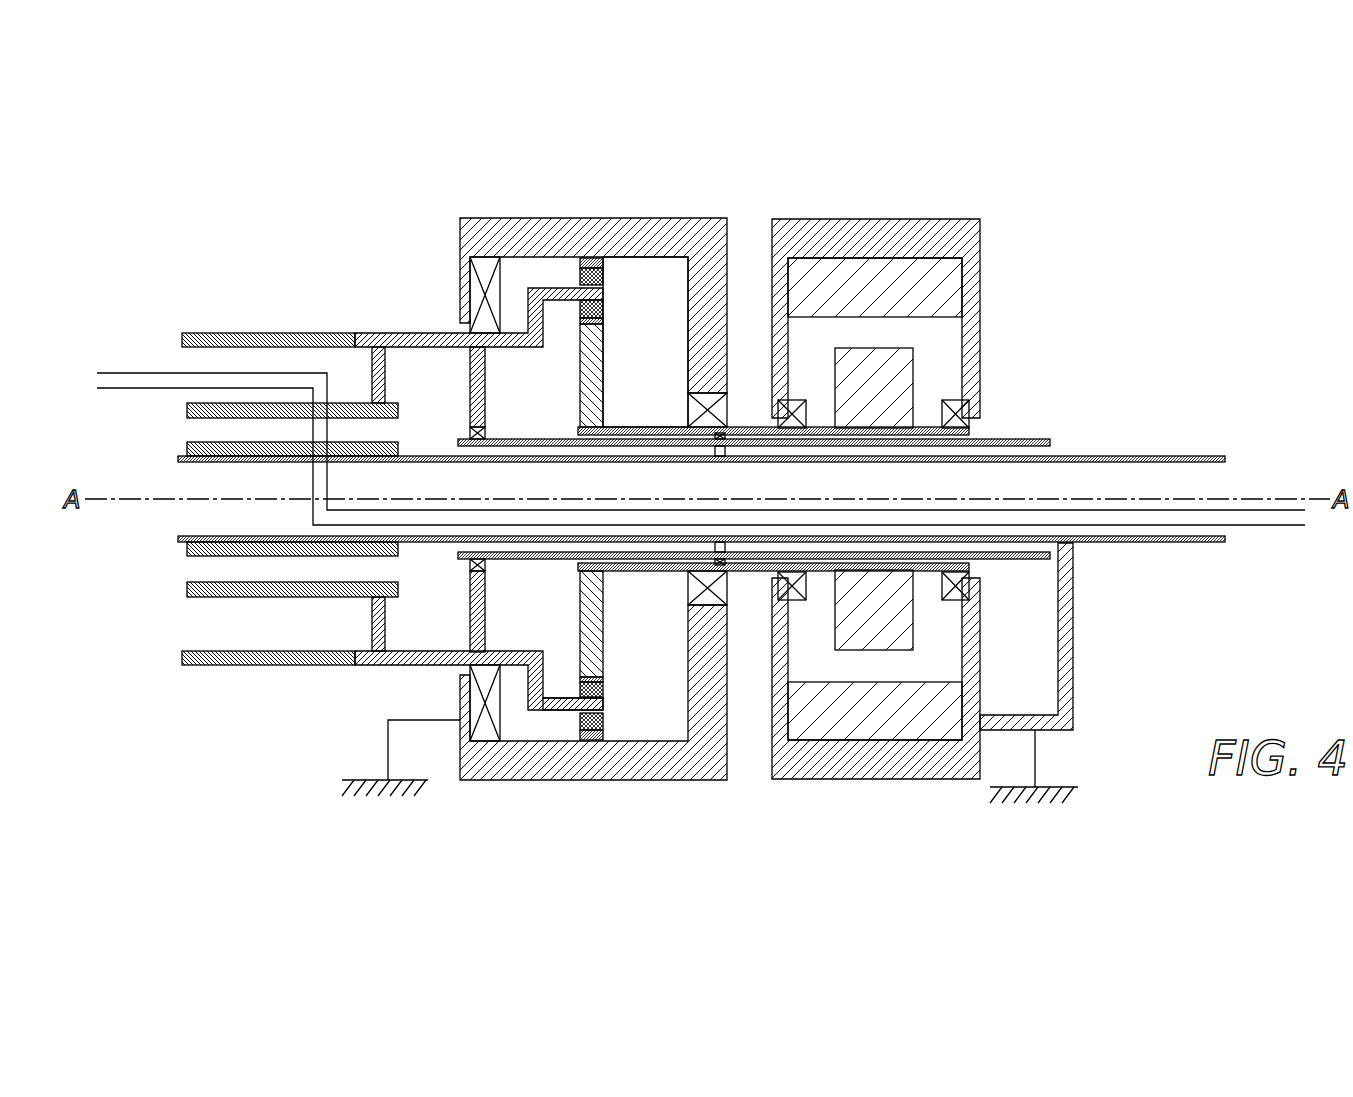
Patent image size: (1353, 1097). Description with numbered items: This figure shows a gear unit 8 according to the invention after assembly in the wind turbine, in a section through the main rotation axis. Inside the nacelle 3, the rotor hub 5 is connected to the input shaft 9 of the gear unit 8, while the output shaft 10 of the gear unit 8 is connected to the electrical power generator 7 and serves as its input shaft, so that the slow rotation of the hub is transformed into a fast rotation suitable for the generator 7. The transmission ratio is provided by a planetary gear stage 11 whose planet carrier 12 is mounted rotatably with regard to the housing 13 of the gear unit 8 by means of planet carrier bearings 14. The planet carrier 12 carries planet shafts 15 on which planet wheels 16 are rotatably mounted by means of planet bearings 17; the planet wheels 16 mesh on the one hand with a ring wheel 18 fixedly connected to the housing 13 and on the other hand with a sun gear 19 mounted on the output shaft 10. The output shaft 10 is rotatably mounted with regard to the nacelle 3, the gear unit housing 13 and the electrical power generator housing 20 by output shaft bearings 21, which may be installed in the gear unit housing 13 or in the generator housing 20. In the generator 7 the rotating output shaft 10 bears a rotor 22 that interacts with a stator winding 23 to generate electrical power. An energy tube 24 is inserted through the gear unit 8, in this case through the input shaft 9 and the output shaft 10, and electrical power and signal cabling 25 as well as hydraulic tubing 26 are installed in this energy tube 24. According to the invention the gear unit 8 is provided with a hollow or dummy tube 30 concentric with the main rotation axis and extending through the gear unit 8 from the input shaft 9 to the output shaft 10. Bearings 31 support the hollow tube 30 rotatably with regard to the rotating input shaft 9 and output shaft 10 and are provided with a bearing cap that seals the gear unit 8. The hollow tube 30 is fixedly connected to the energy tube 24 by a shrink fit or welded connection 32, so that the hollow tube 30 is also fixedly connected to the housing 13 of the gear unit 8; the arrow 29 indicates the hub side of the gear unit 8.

The nacelle 3 is at (1042, 787).
The rotor hub 5 is at (255, 333).
The electrical power generator 7 is at (912, 278).
The gear unit 8 is at (511, 209).
The input shaft 9 is at (420, 333).
The output shaft 10 is at (740, 427).
The planetary gear stage 11 is at (639, 289).
The planet carrier 12 is at (512, 651).
The housing 13 is at (612, 770).
The planet carrier bearings 14 is at (478, 703).
The planet shafts 15 is at (565, 698).
The planet wheels 16 is at (603, 678).
The planet bearings 17 is at (603, 692).
The ring wheel 18 is at (603, 737).
The sun gear 19 is at (580, 402).
The electrical power generator housing 20 is at (975, 247).
The output shaft bearings 21 is at (690, 586).
The rotor 22 is at (885, 645).
The stator winding 23 is at (930, 265).
The energy tube 24 is at (1135, 455).
The electrical power and signal cabling 25 is at (155, 372).
The hydraulic tubing 26 is at (110, 386).
The stator unit 29 is at (158, 594).
The hollow tube 30 is at (605, 552).
The bearings 31 is at (472, 563).
The welded connection 32 is at (717, 448).